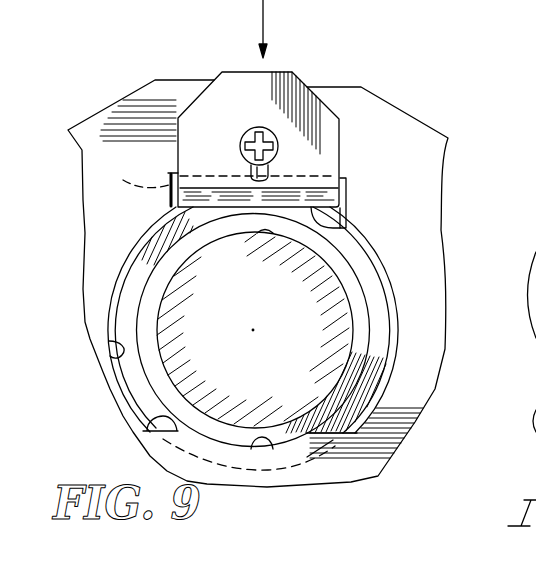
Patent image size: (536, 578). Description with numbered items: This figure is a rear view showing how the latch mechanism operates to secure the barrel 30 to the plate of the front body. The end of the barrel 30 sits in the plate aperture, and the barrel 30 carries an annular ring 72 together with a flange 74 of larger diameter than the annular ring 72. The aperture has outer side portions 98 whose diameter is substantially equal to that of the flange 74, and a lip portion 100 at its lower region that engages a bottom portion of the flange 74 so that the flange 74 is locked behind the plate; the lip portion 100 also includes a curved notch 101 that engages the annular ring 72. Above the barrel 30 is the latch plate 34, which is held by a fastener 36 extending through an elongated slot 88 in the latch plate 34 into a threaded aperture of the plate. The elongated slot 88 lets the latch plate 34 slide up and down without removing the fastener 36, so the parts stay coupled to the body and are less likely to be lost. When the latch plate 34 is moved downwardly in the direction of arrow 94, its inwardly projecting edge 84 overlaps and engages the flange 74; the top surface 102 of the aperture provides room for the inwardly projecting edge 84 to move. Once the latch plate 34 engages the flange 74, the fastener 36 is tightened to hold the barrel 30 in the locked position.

The barrel 30 is at (300, 319).
The latch plate 34 is at (308, 112).
The fastener 36 is at (242, 130).
The annular ring 72 is at (163, 386).
The flange 74 is at (180, 227).
The inwardly projecting edge 84 is at (348, 227).
The elongated slot 88 is at (278, 176).
The arrow 94 is at (268, 11).
The outer side portions 98 is at (125, 361).
The lip portion 100 is at (150, 419).
The curved notch 101 is at (264, 452).
The top surface 102 is at (215, 172).